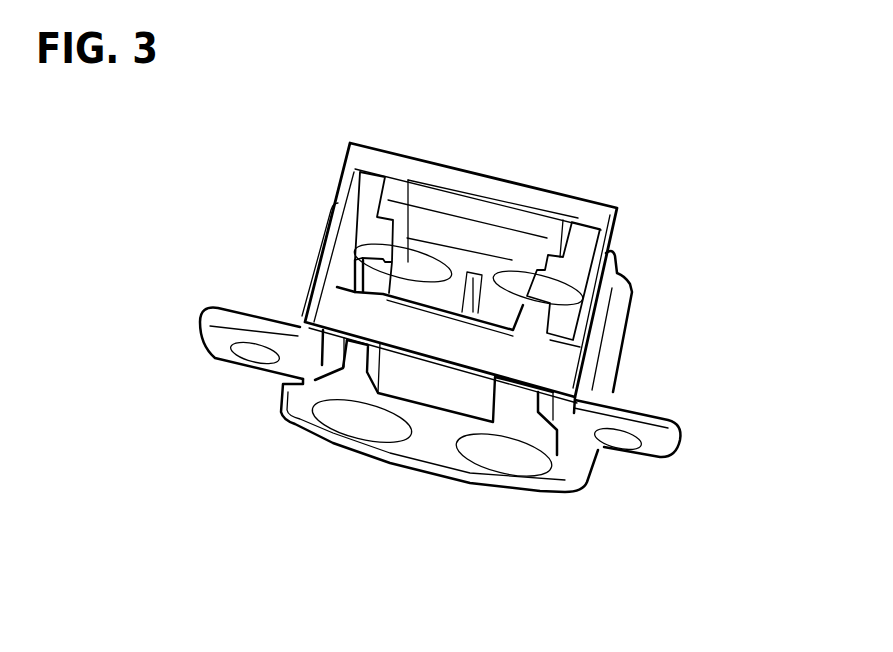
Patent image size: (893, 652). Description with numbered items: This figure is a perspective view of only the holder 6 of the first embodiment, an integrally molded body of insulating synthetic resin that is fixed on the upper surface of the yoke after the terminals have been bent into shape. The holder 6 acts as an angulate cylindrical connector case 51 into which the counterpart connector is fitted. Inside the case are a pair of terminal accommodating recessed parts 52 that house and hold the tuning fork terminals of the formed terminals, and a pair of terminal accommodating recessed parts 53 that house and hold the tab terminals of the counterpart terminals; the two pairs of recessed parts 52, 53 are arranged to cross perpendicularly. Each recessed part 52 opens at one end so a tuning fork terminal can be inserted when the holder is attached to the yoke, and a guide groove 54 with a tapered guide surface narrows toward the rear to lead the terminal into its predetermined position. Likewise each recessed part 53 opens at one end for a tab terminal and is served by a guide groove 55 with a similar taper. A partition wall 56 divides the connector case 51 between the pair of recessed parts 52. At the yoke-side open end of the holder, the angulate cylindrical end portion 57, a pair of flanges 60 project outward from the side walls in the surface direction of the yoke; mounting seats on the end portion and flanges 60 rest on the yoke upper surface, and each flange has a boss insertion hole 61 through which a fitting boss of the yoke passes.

The holder 6 is at (316, 117).
The connector case 51 is at (590, 199).
The terminal accommodating recessed part 52 is at (347, 393).
The terminal accommodating recessed part 53 is at (430, 290).
The guide groove 54 is at (358, 340).
The guide groove 55 is at (390, 205).
The partition wall 56 is at (473, 270).
The angulate cylindrical end portion 57 is at (433, 388).
The flange 60 is at (206, 326).
The boss insertion hole 61 is at (253, 354).